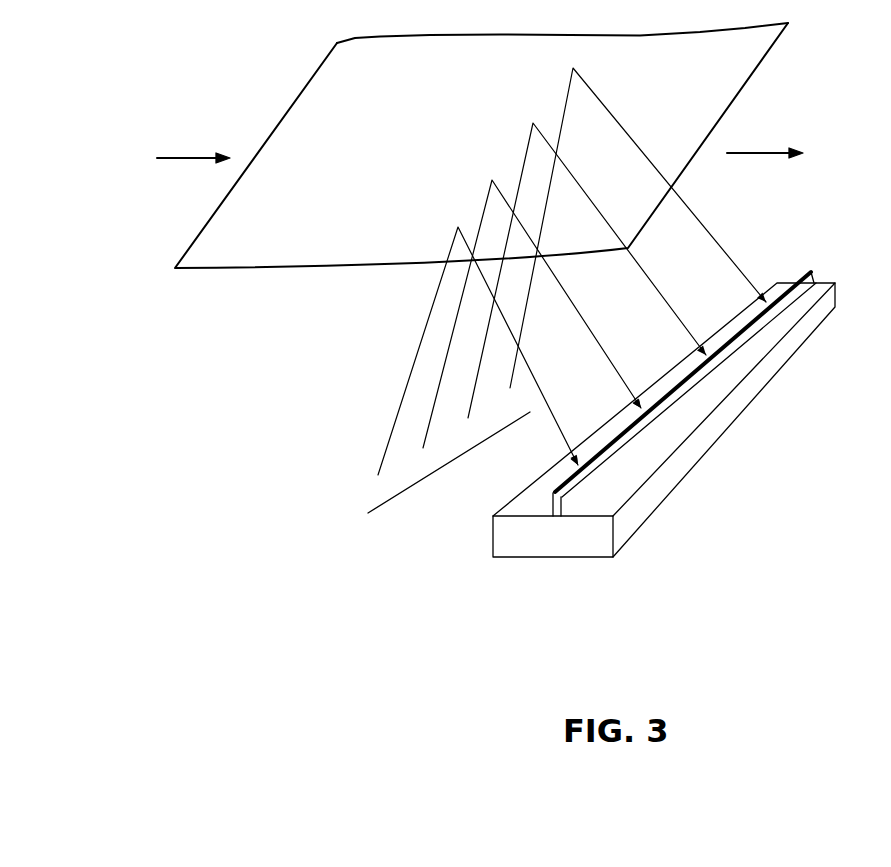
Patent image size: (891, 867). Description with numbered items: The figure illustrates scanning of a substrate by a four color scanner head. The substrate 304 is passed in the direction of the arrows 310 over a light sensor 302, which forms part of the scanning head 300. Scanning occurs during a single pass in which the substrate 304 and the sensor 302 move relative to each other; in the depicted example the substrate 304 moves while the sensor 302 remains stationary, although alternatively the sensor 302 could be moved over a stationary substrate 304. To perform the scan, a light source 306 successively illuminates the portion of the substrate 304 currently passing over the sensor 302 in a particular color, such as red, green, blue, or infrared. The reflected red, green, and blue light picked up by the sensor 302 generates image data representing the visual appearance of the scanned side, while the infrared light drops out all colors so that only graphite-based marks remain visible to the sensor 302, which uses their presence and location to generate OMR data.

The scanning head 300 is at (760, 383).
The light sensor 302 is at (808, 272).
The substrate 304 is at (340, 67).
The light source 306 is at (453, 466).
The arrows 310 is at (200, 153).